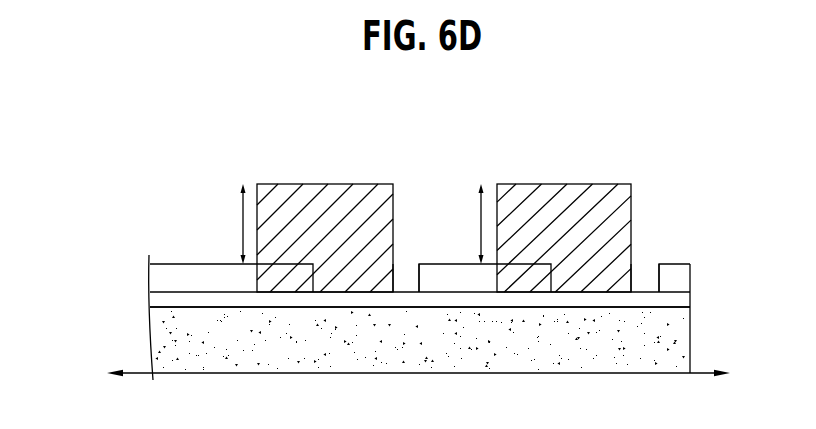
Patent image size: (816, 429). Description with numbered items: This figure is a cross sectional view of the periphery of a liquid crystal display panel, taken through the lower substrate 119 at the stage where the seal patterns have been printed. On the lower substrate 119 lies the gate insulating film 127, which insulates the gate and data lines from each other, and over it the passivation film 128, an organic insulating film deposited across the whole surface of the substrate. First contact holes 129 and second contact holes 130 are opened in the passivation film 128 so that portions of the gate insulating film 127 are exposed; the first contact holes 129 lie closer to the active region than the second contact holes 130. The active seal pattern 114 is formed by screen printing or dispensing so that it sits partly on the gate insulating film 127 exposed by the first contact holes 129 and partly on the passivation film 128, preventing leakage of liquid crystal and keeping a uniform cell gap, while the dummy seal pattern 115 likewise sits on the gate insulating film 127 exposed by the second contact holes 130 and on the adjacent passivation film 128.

The active seal pattern 114 is at (363, 188).
The dummy seal pattern 115 is at (600, 188).
The lower substrate 119 is at (683, 343).
The gate insulating film 127 is at (683, 300).
The passivation film 128 is at (683, 273).
The first contact holes 129 is at (404, 278).
The second contact holes 130 is at (644, 278).